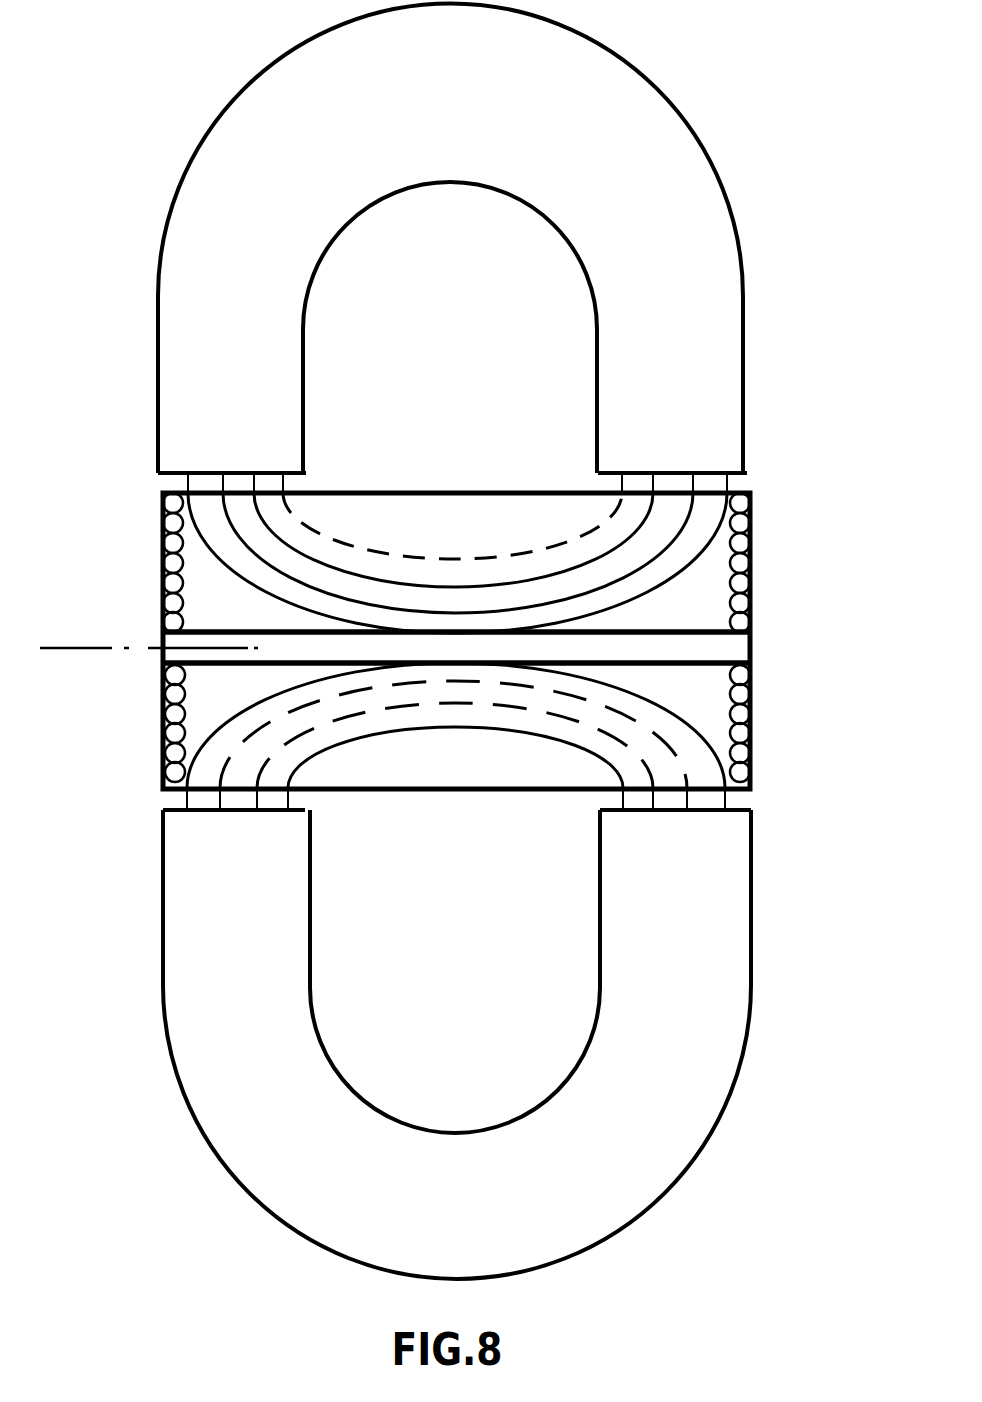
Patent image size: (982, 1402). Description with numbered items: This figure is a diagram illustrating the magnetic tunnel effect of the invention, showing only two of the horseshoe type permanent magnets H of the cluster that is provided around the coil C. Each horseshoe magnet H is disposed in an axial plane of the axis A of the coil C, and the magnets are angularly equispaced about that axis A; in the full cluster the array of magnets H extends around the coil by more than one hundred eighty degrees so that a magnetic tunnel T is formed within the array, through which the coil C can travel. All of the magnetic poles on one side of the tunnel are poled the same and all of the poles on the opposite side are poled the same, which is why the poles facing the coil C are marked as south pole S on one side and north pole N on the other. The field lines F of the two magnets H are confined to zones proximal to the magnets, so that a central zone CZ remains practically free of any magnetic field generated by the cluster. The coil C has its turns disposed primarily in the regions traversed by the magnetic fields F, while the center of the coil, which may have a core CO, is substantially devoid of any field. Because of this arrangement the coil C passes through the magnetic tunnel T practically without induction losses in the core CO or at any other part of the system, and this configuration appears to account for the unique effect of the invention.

The horseshoe magnet H is at (728, 262).
The south pole S is at (232, 641).
The north pole N is at (674, 641).
The magnetic tunnel T is at (768, 550).
The core CO is at (735, 646).
The coil C is at (163, 525).
The central zone CZ is at (228, 682).
The field lines F is at (656, 588).
The axis A is at (70, 650).